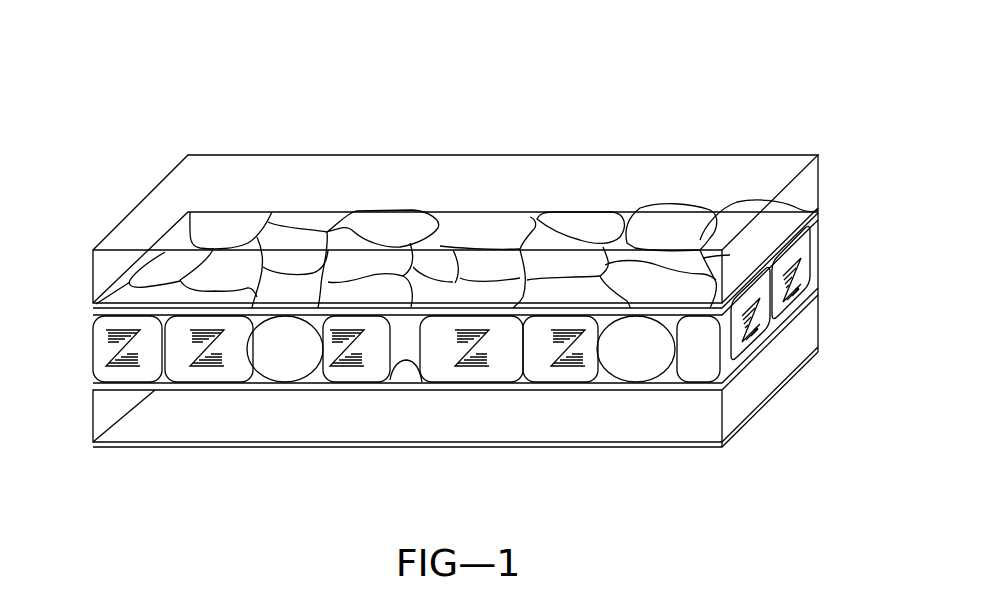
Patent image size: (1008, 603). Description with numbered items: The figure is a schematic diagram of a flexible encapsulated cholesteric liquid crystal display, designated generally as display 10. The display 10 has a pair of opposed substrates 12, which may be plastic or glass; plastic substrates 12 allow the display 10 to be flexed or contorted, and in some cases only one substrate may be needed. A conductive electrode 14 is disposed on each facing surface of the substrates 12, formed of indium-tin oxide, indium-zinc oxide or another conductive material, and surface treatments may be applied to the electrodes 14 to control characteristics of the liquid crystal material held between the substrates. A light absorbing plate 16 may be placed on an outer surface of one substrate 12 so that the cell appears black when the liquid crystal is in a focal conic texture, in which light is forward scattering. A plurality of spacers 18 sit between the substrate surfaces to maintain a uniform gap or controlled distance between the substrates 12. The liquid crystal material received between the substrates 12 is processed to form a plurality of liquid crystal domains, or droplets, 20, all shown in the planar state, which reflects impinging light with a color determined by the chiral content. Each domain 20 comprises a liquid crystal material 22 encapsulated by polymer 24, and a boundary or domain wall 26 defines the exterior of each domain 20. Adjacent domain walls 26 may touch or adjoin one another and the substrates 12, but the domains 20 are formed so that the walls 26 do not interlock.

The liquid crystal display 10 is at (726, 114).
The substrate 12 is at (128, 212).
The conductive electrode 14 is at (818, 216).
The light absorbing plate 16 is at (116, 447).
The spacer 18 is at (461, 349).
The liquid crystal domain 20 is at (492, 223).
The liquid crystal material 22 is at (340, 363).
The polymer 24 is at (375, 368).
The domain wall 26 is at (360, 278).